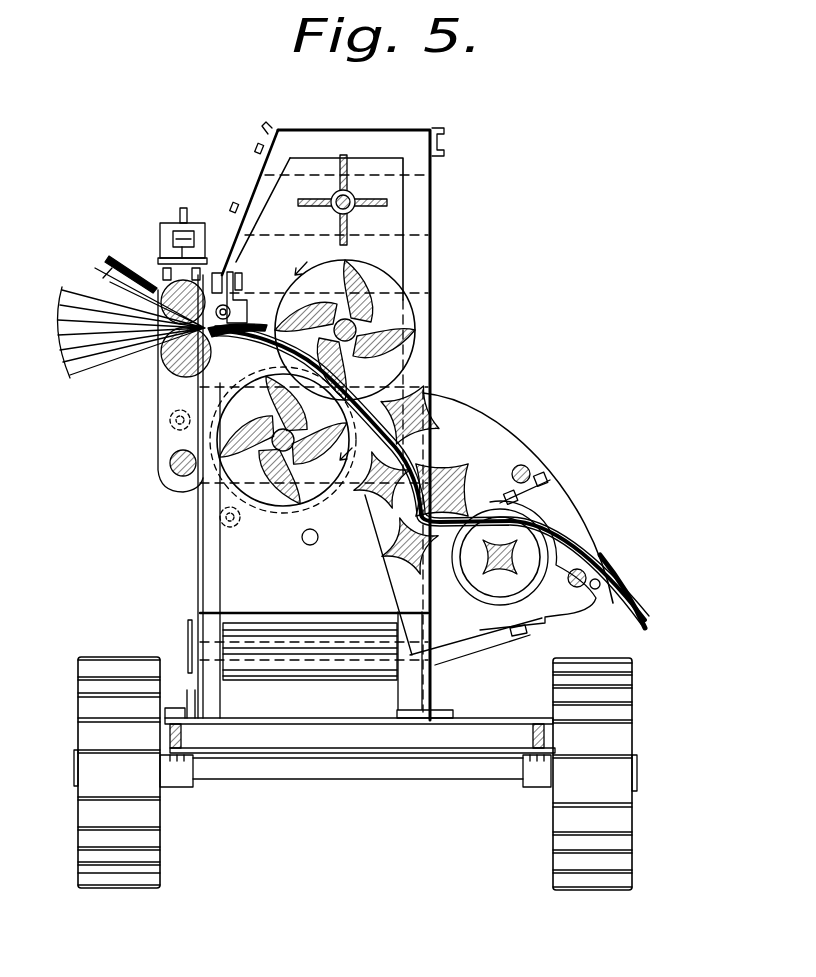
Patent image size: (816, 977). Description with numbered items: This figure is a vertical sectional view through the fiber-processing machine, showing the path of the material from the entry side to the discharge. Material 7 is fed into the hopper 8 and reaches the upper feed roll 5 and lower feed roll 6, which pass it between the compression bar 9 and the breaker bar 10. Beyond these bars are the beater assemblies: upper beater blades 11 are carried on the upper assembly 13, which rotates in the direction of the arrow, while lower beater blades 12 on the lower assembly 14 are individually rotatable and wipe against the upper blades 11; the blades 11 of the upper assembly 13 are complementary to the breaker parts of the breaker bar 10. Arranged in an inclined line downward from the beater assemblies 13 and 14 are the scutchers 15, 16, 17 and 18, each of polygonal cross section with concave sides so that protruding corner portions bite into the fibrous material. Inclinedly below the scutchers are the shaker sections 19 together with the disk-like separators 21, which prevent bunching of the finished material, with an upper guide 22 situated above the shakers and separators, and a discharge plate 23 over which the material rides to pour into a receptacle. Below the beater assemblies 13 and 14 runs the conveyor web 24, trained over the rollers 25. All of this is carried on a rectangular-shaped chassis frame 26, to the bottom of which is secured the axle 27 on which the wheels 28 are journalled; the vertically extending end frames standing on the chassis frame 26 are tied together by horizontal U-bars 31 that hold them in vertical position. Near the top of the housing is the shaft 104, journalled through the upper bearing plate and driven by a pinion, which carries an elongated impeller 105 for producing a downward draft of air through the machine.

The upper feed roll 5 is at (162, 278).
The lower feed roll 6 is at (183, 365).
The material 7 is at (127, 318).
The hopper 8 is at (103, 275).
The compression bar 9 is at (250, 322).
The breaker bar 10 is at (278, 338).
The upper beater blades 11 is at (376, 270).
The lower beater blades 12 is at (260, 430).
The upper beater assembly 13 is at (405, 292).
The lower beater assembly 14 is at (304, 508).
The scutcher 15 is at (440, 423).
The scutcher 16 is at (472, 485).
The scutcher 17 is at (368, 510).
The lowermost scutcher 18 is at (386, 562).
The shaker sections 19 is at (500, 568).
The disk-like separators 21 is at (568, 537).
The upper guide 22 is at (548, 490).
The discharge plate 23 is at (630, 600).
The conveyor web 24 is at (290, 626).
The rollers 25 is at (322, 645).
The chassis frame 26 is at (488, 737).
The axle 27 is at (404, 772).
The wheels 28 is at (140, 820).
The horizontal U-bars 31 is at (270, 128).
The shaft 104 is at (355, 203).
The elongated impeller 105 is at (352, 188).